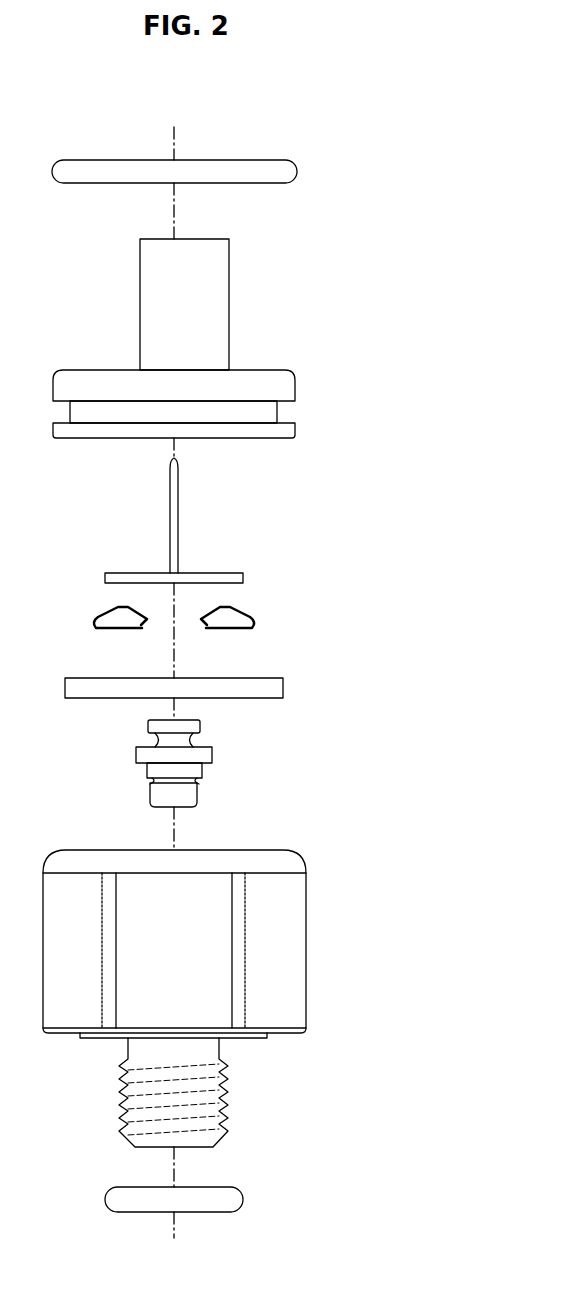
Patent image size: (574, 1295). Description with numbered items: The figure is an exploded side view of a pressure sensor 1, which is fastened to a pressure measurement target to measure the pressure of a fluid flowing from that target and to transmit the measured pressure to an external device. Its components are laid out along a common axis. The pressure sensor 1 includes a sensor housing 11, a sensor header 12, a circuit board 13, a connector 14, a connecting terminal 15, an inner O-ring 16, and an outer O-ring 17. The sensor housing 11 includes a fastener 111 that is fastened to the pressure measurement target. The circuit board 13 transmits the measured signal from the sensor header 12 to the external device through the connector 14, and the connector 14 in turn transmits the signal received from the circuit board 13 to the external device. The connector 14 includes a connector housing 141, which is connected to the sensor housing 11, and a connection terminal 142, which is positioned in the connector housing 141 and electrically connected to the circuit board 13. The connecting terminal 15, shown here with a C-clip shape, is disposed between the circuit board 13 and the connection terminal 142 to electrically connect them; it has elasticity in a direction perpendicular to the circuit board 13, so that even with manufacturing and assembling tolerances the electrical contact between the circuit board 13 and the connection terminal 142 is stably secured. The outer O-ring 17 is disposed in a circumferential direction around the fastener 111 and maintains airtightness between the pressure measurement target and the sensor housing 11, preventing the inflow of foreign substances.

The pressure sensor 1 is at (181, 103).
The sensor housing 11 is at (232, 998).
The fastener 111 is at (226, 1090).
The sensor header 12 is at (207, 757).
The circuit board 13 is at (283, 687).
The connector 14 is at (252, 411).
The connector housing 141 is at (287, 387).
The connection terminal 142 is at (178, 530).
The connecting terminal 15 is at (247, 615).
The inner O-ring 16 is at (297, 172).
The outer O-ring 17 is at (243, 1199).